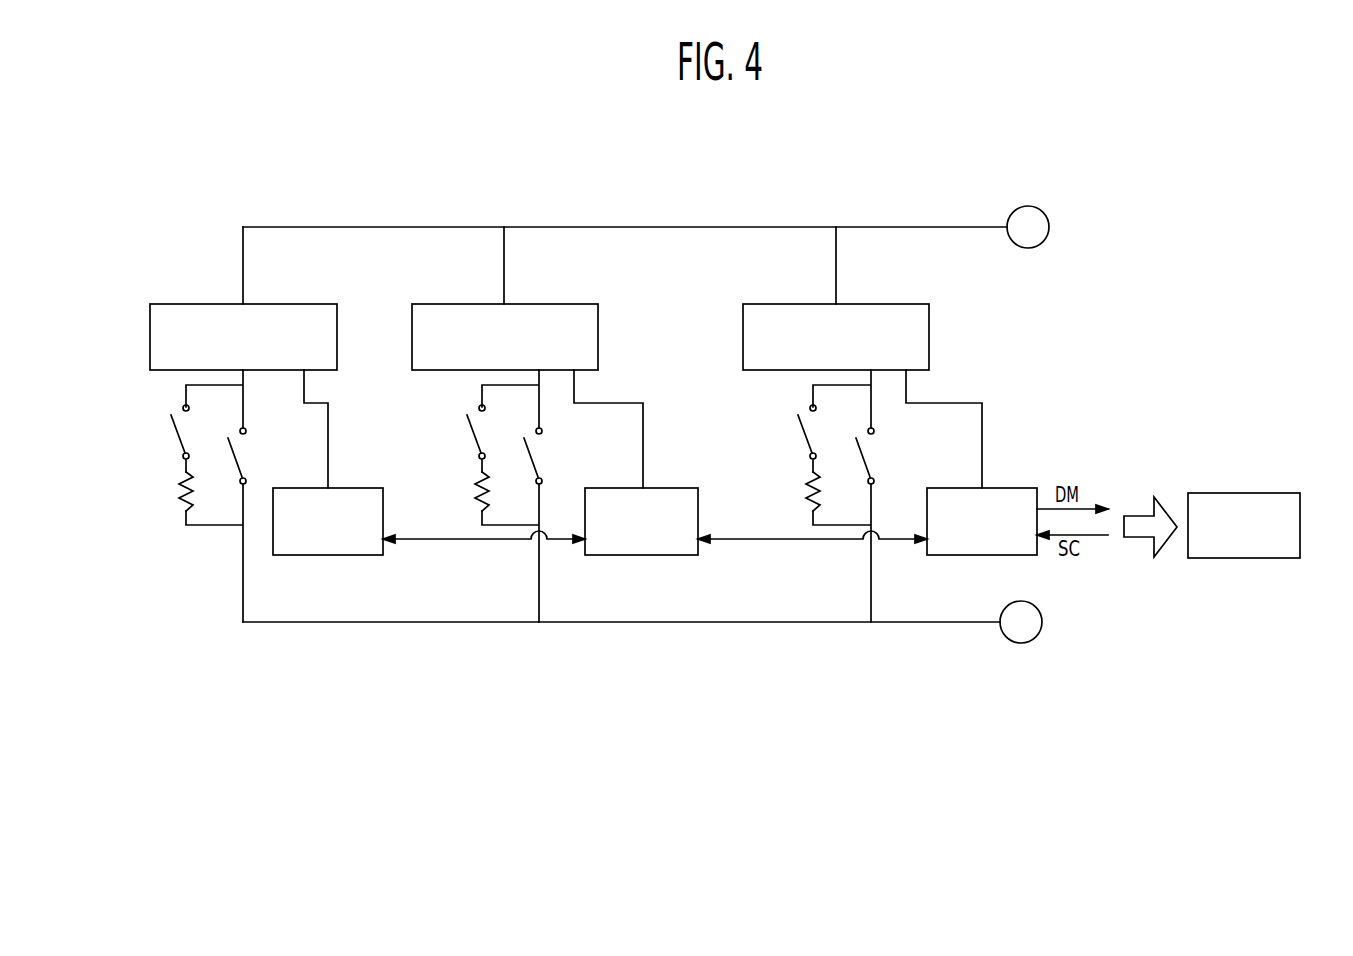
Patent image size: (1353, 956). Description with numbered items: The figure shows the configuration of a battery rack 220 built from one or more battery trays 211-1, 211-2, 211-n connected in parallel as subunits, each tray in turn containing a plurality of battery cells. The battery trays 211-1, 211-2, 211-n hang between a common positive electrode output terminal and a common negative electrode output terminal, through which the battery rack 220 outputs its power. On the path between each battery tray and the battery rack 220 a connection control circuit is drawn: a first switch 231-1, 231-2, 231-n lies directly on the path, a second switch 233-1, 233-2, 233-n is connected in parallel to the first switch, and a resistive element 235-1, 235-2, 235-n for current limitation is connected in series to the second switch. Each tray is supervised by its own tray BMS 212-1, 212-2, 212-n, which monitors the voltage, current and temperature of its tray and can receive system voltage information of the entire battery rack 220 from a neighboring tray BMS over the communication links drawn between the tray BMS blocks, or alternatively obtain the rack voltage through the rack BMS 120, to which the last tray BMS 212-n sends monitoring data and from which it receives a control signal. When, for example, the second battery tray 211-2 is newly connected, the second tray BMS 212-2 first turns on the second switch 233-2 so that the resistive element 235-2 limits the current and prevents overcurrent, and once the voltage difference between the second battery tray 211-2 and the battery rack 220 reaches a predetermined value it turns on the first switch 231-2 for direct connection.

The battery rack 220 is at (492, 197).
The battery tray 211-1 is at (302, 304).
The second battery tray 211-2 is at (581, 282).
The battery tray 211-n is at (912, 282).
The tray BMS 212-1 is at (348, 488).
The second tray BMS 212-2 is at (660, 488).
The tray BMS 212-n is at (1002, 488).
The first switch 231-1 is at (241, 457).
The first switch 231-2 is at (537, 457).
The first switch 231-n is at (869, 457).
The second switch 233-1 is at (177, 438).
The second switch 233-2 is at (473, 438).
The second switch 233-n is at (804, 438).
The resistive element 235-1 is at (176, 493).
The resistive element 235-2 is at (472, 493).
The resistive element 235-n is at (803, 493).
The rack BMS 120 is at (1282, 492).